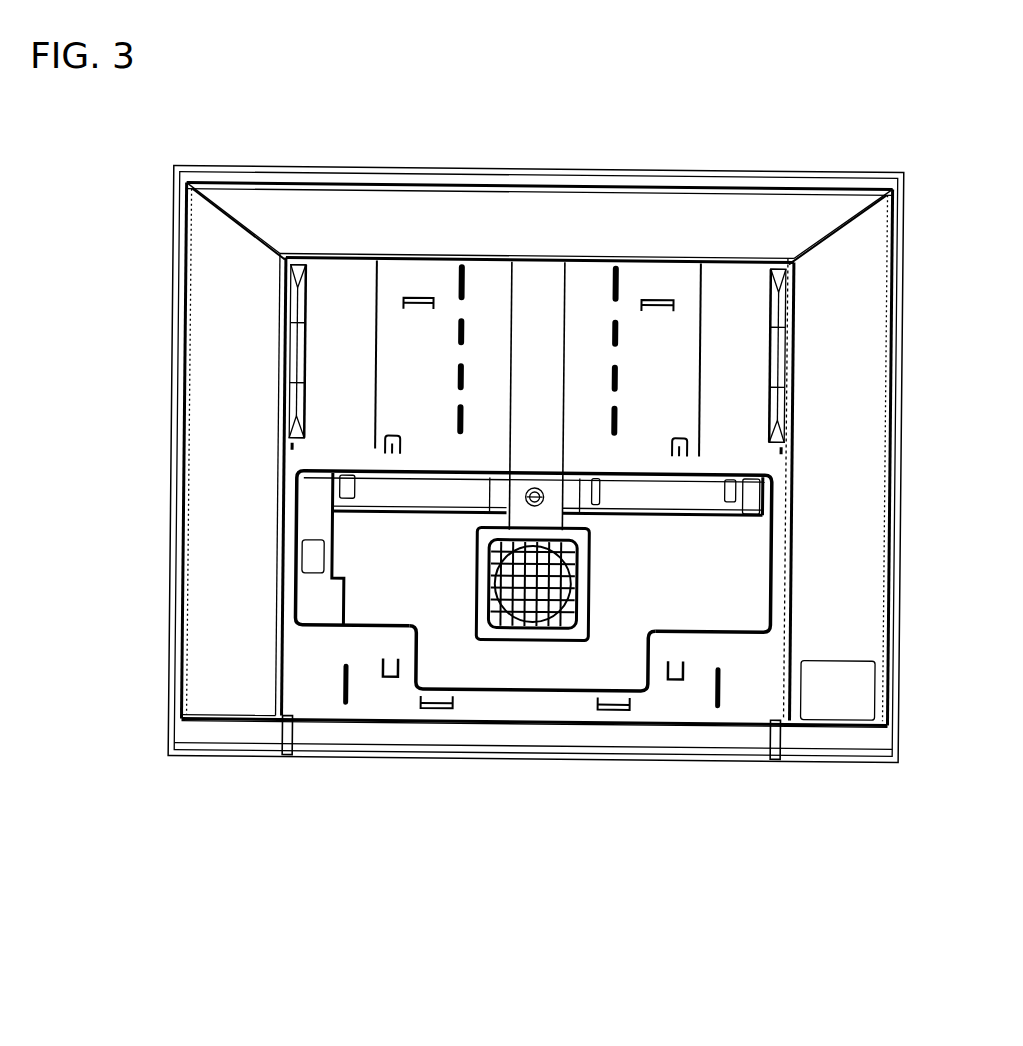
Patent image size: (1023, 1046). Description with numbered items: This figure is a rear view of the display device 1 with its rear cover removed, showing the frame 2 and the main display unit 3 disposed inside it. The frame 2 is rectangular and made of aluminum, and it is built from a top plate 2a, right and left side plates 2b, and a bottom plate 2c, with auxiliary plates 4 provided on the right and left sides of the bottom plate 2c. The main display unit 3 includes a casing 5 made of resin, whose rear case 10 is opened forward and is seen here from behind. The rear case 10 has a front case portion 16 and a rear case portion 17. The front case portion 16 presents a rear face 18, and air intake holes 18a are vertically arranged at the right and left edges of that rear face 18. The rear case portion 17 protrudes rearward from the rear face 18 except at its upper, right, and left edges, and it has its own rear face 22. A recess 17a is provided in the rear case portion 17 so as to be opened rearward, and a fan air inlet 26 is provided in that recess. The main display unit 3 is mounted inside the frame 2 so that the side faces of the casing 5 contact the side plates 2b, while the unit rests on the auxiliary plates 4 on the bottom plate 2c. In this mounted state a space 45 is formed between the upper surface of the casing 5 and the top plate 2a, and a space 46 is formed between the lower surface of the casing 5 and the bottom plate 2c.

The display device 1 is at (872, 144).
The frame 2 is at (522, 170).
The top plate 2a is at (613, 170).
The side plates 2b is at (175, 322).
The bottom plate 2c is at (513, 763).
The main display unit 3 is at (395, 200).
The auxiliary plates 4 is at (293, 735).
The casing 5 is at (487, 210).
The rear case 10 is at (225, 703).
The front case portion 16 is at (340, 220).
The rear case portion 17 is at (280, 555).
The recess 17a is at (422, 657).
The rear face 18 is at (222, 498).
The air intake holes 18a is at (182, 268).
The rear face 22 is at (377, 705).
The fan air inlet 26 is at (583, 590).
The space 45 is at (740, 205).
The space 46 is at (648, 738).